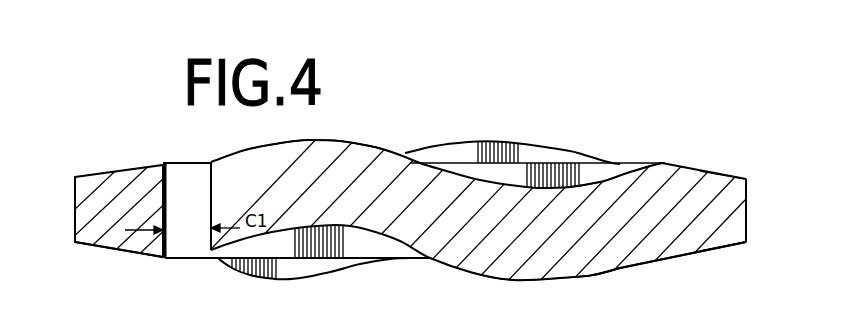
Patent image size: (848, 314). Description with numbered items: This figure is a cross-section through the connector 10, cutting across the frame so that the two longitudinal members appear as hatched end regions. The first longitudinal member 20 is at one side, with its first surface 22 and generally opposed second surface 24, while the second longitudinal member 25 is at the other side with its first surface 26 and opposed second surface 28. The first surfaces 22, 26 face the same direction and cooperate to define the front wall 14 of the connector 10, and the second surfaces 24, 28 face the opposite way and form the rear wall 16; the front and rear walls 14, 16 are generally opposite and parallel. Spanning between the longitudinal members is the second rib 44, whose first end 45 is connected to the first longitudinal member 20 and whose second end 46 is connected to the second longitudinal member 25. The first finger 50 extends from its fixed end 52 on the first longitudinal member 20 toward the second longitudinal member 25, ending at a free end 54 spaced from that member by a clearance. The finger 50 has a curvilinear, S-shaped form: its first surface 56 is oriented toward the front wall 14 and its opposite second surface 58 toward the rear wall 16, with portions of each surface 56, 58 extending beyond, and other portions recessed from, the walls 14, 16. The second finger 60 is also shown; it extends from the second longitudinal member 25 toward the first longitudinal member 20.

The connector 10 is at (604, 109).
The front wall 14 is at (185, 163).
The rear wall 16 is at (166, 258).
The first longitudinal member 20 is at (745, 212).
The first surface 22 is at (718, 172).
The second surface 24 is at (717, 250).
The second longitudinal member 25 is at (76, 200).
The first surface 26 is at (93, 175).
The second surface 28 is at (110, 250).
The second rib 44 is at (478, 173).
The first end 45 is at (621, 170).
The second end 46 is at (170, 178).
The first finger 50 is at (613, 250).
The fixed end 52 is at (654, 181).
The free end 54 is at (212, 162).
The first surface 56 is at (342, 144).
The second surface 58 is at (540, 282).
The second finger 60 is at (500, 143).